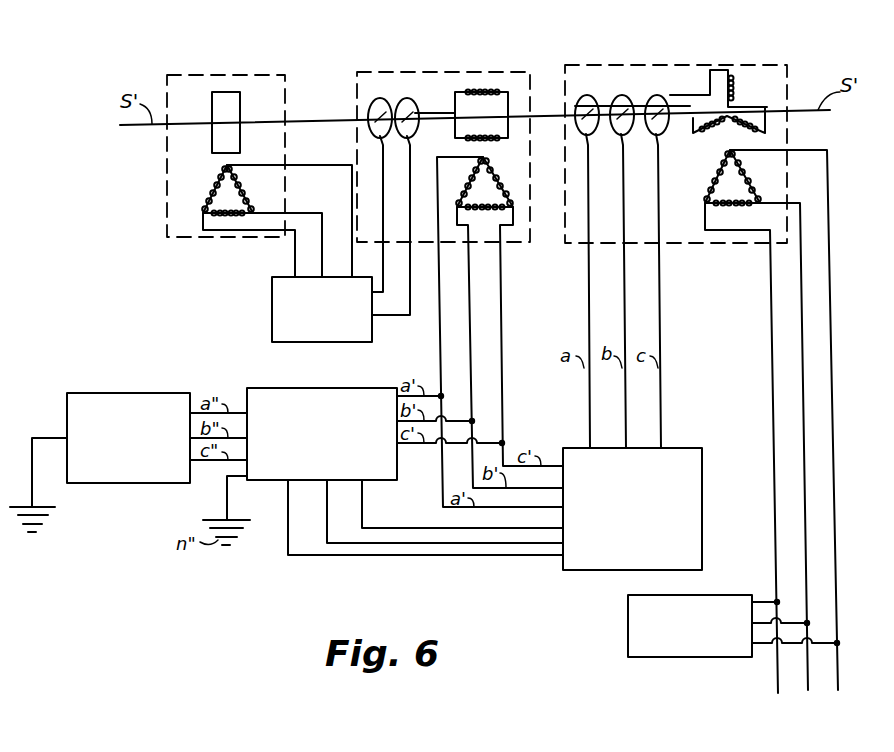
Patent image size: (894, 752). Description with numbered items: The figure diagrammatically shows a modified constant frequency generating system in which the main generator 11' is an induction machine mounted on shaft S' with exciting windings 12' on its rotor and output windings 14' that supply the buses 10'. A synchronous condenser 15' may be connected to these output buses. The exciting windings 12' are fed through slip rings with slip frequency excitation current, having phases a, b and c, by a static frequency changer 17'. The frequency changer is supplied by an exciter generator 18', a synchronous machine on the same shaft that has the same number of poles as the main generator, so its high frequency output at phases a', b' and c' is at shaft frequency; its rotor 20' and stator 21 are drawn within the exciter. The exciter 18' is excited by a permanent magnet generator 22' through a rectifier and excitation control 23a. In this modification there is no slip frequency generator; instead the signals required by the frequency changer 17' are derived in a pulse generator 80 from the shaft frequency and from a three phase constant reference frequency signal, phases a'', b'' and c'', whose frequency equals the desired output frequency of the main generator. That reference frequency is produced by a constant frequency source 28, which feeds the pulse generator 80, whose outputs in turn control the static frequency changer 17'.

The permanent magnet generator 22' is at (259, 158).
The excitation control 23a is at (272, 305).
The exciter generator 18' is at (443, 139).
The rotor of frequency converter 20' is at (503, 83).
The stator 21 is at (500, 186).
The main generator 11' is at (676, 238).
The exciting windings 12' is at (739, 80).
The output windings 14' is at (752, 419).
The constant frequency source 28 is at (107, 398).
The pulse generator 80 is at (268, 400).
The static frequency changer 17' is at (653, 489).
The synchronous condenser 15' is at (733, 603).
The buses 10' is at (808, 692).